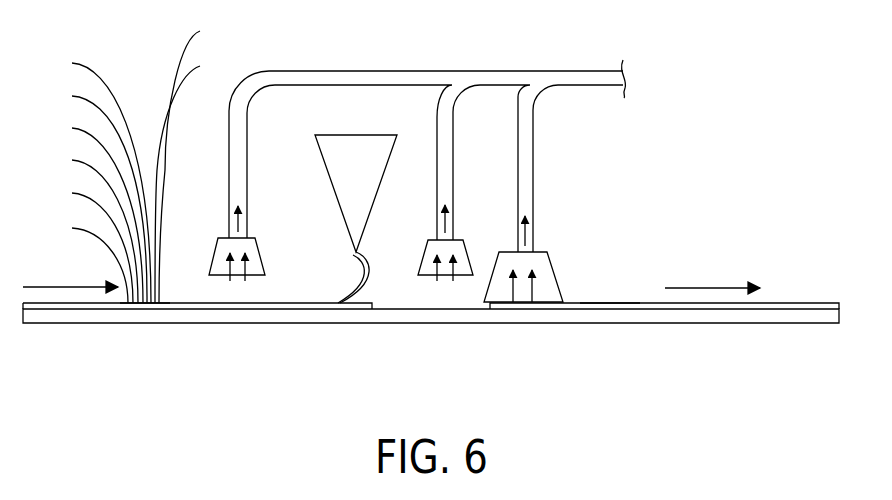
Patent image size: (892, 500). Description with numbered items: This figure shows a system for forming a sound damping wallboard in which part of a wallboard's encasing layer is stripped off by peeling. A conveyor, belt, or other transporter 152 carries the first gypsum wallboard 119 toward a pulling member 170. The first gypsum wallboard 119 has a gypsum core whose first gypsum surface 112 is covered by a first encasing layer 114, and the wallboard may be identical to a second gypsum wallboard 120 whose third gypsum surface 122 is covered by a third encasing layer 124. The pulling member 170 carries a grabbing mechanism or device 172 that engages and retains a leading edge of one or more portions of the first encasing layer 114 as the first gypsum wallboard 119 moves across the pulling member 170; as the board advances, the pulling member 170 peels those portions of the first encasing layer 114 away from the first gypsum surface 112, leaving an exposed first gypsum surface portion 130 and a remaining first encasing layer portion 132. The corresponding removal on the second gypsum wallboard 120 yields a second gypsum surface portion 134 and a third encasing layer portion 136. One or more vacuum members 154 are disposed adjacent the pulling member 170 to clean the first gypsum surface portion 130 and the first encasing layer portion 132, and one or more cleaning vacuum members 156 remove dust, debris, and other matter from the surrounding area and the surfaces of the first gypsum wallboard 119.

The first gypsum surface 112 is at (88, 193).
The first encasing layer 114 is at (197, 178).
The first gypsum wallboard 119 is at (143, 304).
The second gypsum wallboard 120 is at (208, 304).
The third gypsum surface 122 is at (90, 176).
The third encasing layer 124 is at (199, 160).
The first gypsum surface portion 130 is at (79, 260).
The first encasing layer portion 132 is at (81, 241).
The second gypsum surface portion 134 is at (84, 225).
The third encasing layer portion 136 is at (86, 209).
The transporter 152 is at (306, 321).
The vacuum member 154 is at (256, 260).
The cleaning vacuum member 156 is at (553, 268).
The pulling member 170 is at (352, 212).
The grabbing mechanism 172 is at (371, 278).